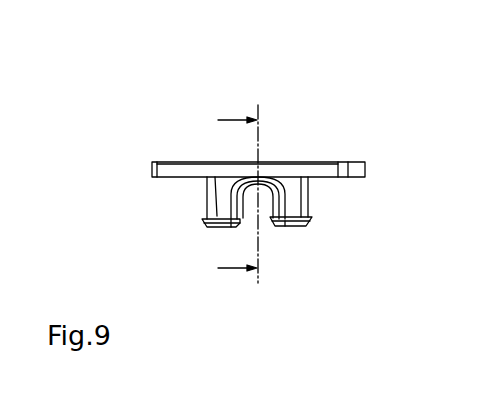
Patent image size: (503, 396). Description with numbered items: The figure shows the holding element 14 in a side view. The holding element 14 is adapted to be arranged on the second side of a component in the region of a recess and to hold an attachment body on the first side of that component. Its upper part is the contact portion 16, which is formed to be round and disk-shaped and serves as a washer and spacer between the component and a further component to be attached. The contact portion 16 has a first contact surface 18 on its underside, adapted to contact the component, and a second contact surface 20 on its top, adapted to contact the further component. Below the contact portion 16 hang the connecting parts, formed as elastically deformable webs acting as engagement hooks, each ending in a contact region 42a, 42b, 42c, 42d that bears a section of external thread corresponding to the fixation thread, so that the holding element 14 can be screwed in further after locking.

The holding element 14 is at (386, 104).
The contact portion 16 is at (358, 170).
The first contact surface 18 is at (166, 177).
The second contact surface 20 is at (330, 161).
The contact region 42a is at (210, 228).
The contact region 42b is at (292, 226).
The contact region 42c is at (310, 220).
The contact region 42d is at (190, 208).